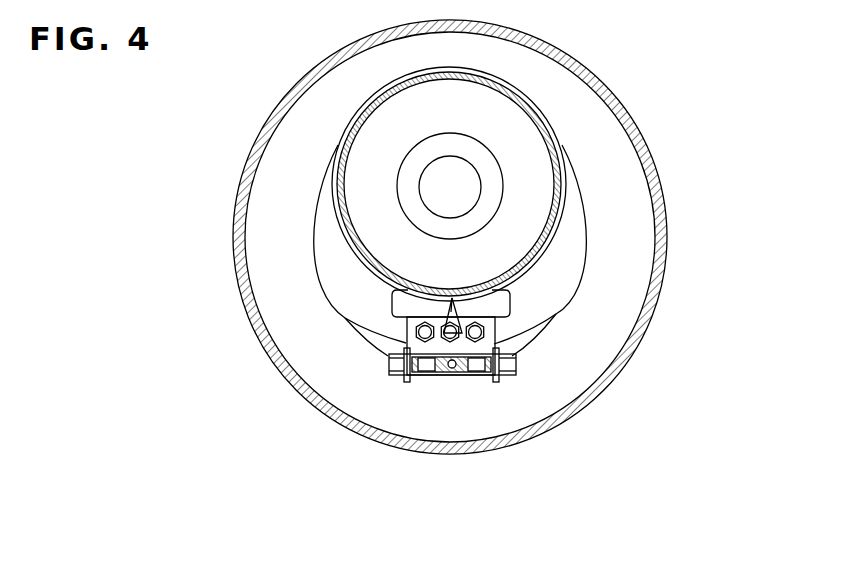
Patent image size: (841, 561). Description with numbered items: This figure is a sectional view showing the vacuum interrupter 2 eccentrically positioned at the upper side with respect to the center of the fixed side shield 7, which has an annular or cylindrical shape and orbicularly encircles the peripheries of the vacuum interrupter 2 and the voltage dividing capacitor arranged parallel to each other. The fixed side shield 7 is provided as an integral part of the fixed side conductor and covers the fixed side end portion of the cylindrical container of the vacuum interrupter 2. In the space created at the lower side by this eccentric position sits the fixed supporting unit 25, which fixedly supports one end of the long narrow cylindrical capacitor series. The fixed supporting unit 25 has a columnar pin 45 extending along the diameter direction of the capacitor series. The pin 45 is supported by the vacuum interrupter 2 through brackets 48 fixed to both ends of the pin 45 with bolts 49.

The vacuum interrupter 2 is at (541, 101).
The fixed side shield 7 is at (643, 342).
The fixed supporting unit 25 is at (425, 396).
The pin 45 is at (458, 333).
The brackets 48 is at (346, 318).
The bolts 49 is at (392, 366).